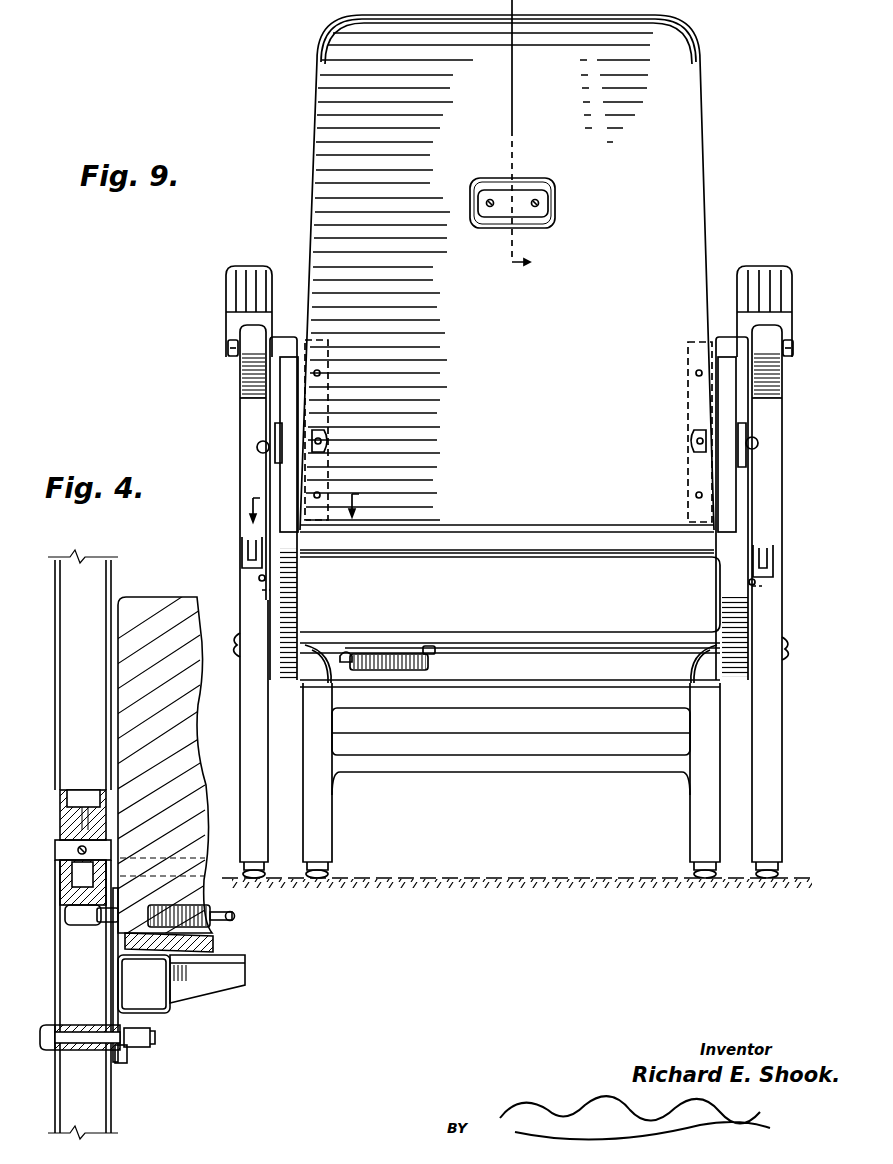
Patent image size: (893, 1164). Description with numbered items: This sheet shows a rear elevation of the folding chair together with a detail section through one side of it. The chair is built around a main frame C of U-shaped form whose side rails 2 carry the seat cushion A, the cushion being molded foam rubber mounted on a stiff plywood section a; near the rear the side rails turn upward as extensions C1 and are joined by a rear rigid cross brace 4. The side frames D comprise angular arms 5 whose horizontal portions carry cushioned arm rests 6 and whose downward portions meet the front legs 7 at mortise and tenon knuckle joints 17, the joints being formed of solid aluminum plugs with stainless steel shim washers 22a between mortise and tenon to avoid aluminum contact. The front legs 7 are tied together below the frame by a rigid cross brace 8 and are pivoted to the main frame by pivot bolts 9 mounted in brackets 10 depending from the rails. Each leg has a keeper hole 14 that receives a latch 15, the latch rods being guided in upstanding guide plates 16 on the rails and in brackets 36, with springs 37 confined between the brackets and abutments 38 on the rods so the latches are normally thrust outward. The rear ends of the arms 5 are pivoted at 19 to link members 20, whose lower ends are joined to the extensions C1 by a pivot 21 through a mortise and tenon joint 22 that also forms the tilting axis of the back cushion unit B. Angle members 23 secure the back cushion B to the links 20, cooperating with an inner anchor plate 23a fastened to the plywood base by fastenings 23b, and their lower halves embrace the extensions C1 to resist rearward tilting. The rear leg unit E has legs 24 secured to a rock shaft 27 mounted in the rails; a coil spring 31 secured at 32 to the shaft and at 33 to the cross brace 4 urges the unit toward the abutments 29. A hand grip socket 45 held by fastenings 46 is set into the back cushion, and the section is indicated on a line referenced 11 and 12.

In FIG. 4, the side rails 2 is at (160, 993).
In FIG. 9, the rear rigid cross brace 4 is at (531, 648).
In FIG. 9, the angular arms 5 is at (242, 334).
In FIG. 4, the angular arms 5 is at (62, 748).
In FIG. 9, the cushioned arm rests 6 is at (244, 268).
In FIG. 9, the front legs 7 is at (248, 772).
In FIG. 4, the front legs 7 is at (66, 972).
In FIG. 9, the rigid cross member or brace 8 is at (490, 703).
In FIG. 9, the pivot bolts 9 is at (238, 657).
In FIG. 4, the pivot bolts 9 is at (47, 1052).
In FIG. 4, the brackets 10 is at (126, 1066).
In FIG. 9, the section line 11 is at (542, 138).
In FIG. 9, the section line 12 is at (313, 515).
In FIG. 4, the keeper hole 14 is at (110, 926).
In FIG. 9, the latches 15 is at (264, 592).
In FIG. 4, the latches 15 is at (94, 920).
In FIG. 4, the upstanding guide plates 16 is at (60, 858).
In FIG. 4, the mortise and tenon knuckle joints 17 is at (62, 822).
In FIG. 9, the pivot elements 19 is at (228, 352).
In FIG. 9, the link members 20 is at (288, 347).
In FIG. 9, the pivot element 21 is at (257, 447).
In FIG. 9, the mortise and tenon joint arrangement 22 is at (280, 442).
In FIG. 4, the stainless steel shim washers 22a is at (90, 806).
In FIG. 9, the angle members 23 is at (297, 407).
In FIG. 9, the inner anchor plate 23a is at (330, 428).
In FIG. 9, the fastenings 23b is at (330, 455).
In FIG. 9, the legs 24 is at (326, 817).
In FIG. 9, the rock shaft 27 is at (593, 660).
In FIG. 9, the abutments 29 is at (313, 665).
In FIG. 9, the coil spring 31 is at (399, 652).
In FIG. 9, the spring end securing point 32 is at (350, 652).
In FIG. 9, the spring end securing point 33 is at (432, 647).
In FIG. 4, the brackets 36 is at (246, 953).
In FIG. 4, the springs 37 is at (220, 910).
In FIG. 4, the abutments 38 is at (182, 905).
In FIG. 9, the hand grip socket 45 is at (494, 222).
In FIG. 9, the fastenings 46 is at (490, 200).
In FIG. 9, the seat cushion A is at (540, 574).
In FIG. 4, the seat cushion A is at (160, 602).
In FIG. 9, the back cushion unit B is at (588, 248).
In FIG. 9, the main frame C is at (724, 569).
In FIG. 9, the upturned rear extensions of the main frame C1 is at (302, 592).
In FIG. 9, the side frames D is at (238, 481).
In FIG. 9, the rear leg unit E is at (520, 772).
In FIG. 4, the plywood section a is at (216, 944).